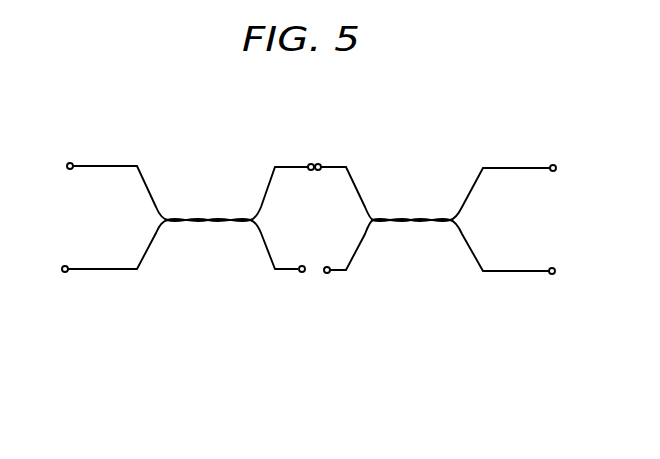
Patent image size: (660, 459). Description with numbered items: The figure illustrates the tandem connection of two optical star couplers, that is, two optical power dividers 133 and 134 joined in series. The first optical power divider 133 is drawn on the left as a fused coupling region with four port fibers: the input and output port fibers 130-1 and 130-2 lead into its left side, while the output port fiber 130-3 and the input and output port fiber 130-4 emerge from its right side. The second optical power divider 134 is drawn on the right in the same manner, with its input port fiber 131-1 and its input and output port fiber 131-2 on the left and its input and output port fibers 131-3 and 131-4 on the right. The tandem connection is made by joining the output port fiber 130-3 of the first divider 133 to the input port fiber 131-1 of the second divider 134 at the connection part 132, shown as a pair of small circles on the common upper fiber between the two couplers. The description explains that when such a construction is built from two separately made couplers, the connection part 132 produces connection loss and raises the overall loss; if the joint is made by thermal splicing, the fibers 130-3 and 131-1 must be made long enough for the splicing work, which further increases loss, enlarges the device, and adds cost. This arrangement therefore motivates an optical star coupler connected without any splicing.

The input and output port fiber 130-1 is at (92, 164).
The input and output port fiber 130-2 is at (92, 272).
The output port fiber 130-3 is at (287, 165).
The input and output port fiber 130-4 is at (286, 272).
The input port fiber 131-1 is at (336, 165).
The input and output port fiber 131-2 is at (336, 273).
The input and output port fiber 131-3 is at (538, 167).
The input and output port fiber 131-4 is at (536, 273).
The connection part 132 is at (315, 163).
The optical power divider 133 is at (318, 395).
The optical power divider 134 is at (563, 398).